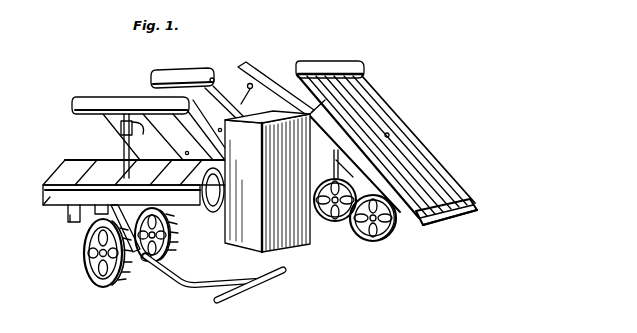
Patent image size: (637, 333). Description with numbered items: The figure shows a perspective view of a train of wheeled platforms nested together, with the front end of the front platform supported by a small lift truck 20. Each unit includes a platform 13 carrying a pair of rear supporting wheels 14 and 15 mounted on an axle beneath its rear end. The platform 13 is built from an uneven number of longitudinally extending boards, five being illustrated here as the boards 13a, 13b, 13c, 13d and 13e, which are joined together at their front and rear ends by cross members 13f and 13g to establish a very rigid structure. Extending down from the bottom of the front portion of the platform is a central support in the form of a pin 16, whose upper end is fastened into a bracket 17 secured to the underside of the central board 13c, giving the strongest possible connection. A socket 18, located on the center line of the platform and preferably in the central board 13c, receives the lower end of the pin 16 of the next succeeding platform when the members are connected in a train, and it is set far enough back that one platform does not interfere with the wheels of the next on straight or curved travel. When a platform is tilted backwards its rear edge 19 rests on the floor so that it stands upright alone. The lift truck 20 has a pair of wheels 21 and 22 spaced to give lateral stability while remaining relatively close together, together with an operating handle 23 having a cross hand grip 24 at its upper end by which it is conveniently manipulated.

The platform 13 is at (112, 140).
The board 13a is at (410, 140).
The board 13b is at (405, 181).
The central board 13c is at (425, 189).
The board 13d is at (450, 196).
The board 13e is at (385, 167).
The cross member 13f is at (330, 66).
The cross member 13g is at (438, 218).
The rear supporting wheel 14 is at (170, 217).
The rear supporting wheel 15 is at (70, 227).
The pin 16 is at (240, 90).
The bracket 17 is at (120, 132).
The socket 18 is at (390, 136).
The rear edge 19 is at (462, 223).
The lift truck 20 is at (82, 278).
The wheel 21 is at (170, 261).
The wheel 22 is at (110, 286).
The operating handle 23 is at (207, 289).
The cross hand grip 24 is at (284, 272).